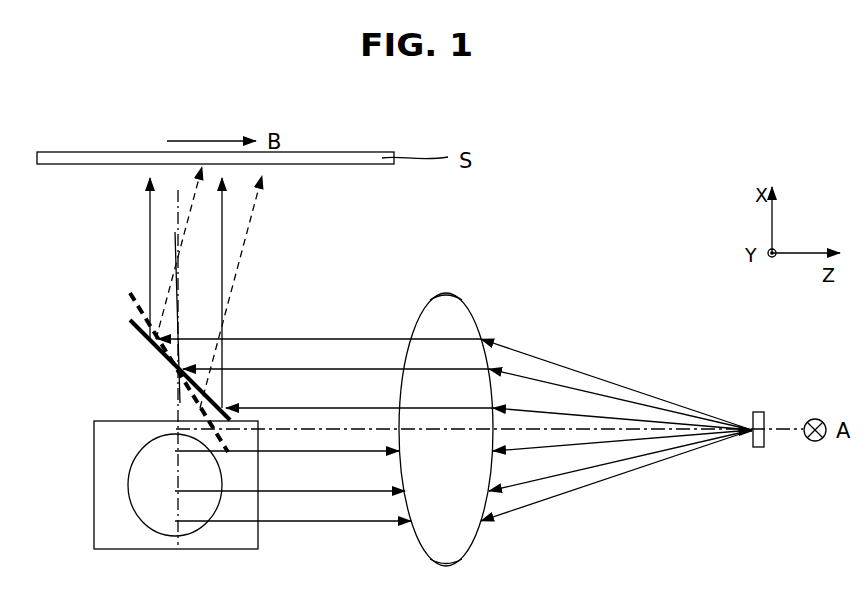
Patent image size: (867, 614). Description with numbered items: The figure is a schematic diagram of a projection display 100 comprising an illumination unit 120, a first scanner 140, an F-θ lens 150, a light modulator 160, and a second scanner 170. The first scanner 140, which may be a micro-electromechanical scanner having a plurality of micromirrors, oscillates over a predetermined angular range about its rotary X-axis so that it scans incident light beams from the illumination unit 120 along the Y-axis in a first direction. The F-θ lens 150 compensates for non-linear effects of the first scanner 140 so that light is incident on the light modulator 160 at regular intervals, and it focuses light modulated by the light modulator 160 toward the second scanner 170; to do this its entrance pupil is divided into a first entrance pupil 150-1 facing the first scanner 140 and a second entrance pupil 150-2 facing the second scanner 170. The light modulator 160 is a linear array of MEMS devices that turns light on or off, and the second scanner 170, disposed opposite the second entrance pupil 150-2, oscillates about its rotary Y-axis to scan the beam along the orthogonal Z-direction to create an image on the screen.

The projection display 100 is at (574, 185).
The illumination unit 120 is at (229, 552).
The first scanner 140 is at (128, 485).
The F-θ lens 150 is at (475, 544).
The first entrance pupil 150-1 is at (437, 527).
The second entrance pupil 150-2 is at (460, 315).
The light modulator 160 is at (758, 410).
The second scanner 170 is at (148, 335).